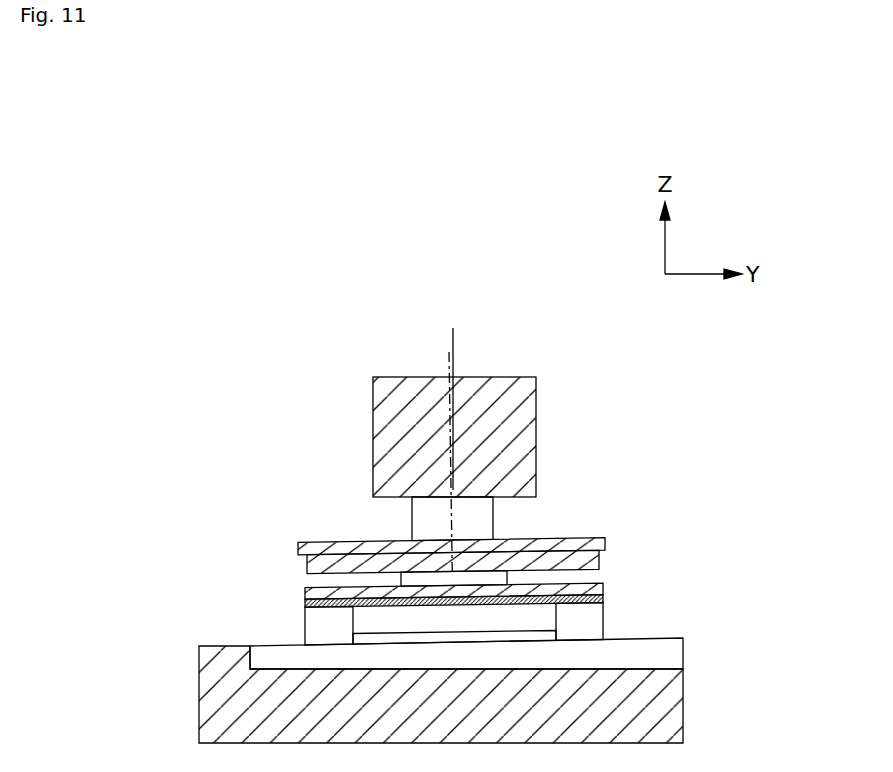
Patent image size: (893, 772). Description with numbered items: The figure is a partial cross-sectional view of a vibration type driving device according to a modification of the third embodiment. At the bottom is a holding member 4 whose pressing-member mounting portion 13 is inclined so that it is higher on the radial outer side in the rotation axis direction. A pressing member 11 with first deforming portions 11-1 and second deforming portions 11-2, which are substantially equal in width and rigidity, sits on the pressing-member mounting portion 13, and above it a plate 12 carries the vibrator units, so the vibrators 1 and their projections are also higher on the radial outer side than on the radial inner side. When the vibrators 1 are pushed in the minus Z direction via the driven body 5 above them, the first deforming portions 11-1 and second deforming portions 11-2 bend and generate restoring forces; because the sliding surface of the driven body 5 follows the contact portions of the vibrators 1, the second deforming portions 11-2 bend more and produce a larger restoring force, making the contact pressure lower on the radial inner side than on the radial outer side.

The driven body 5 is at (522, 417).
The vibrator 1 is at (603, 558).
The tilt stage plate 12 is at (595, 592).
The pressing member 11 is at (365, 618).
The first deforming portion 11-1 is at (318, 625).
The second deforming portion 11-2 is at (590, 617).
The pressing-member mounting portion 13 is at (663, 657).
The holding member 4 is at (662, 703).